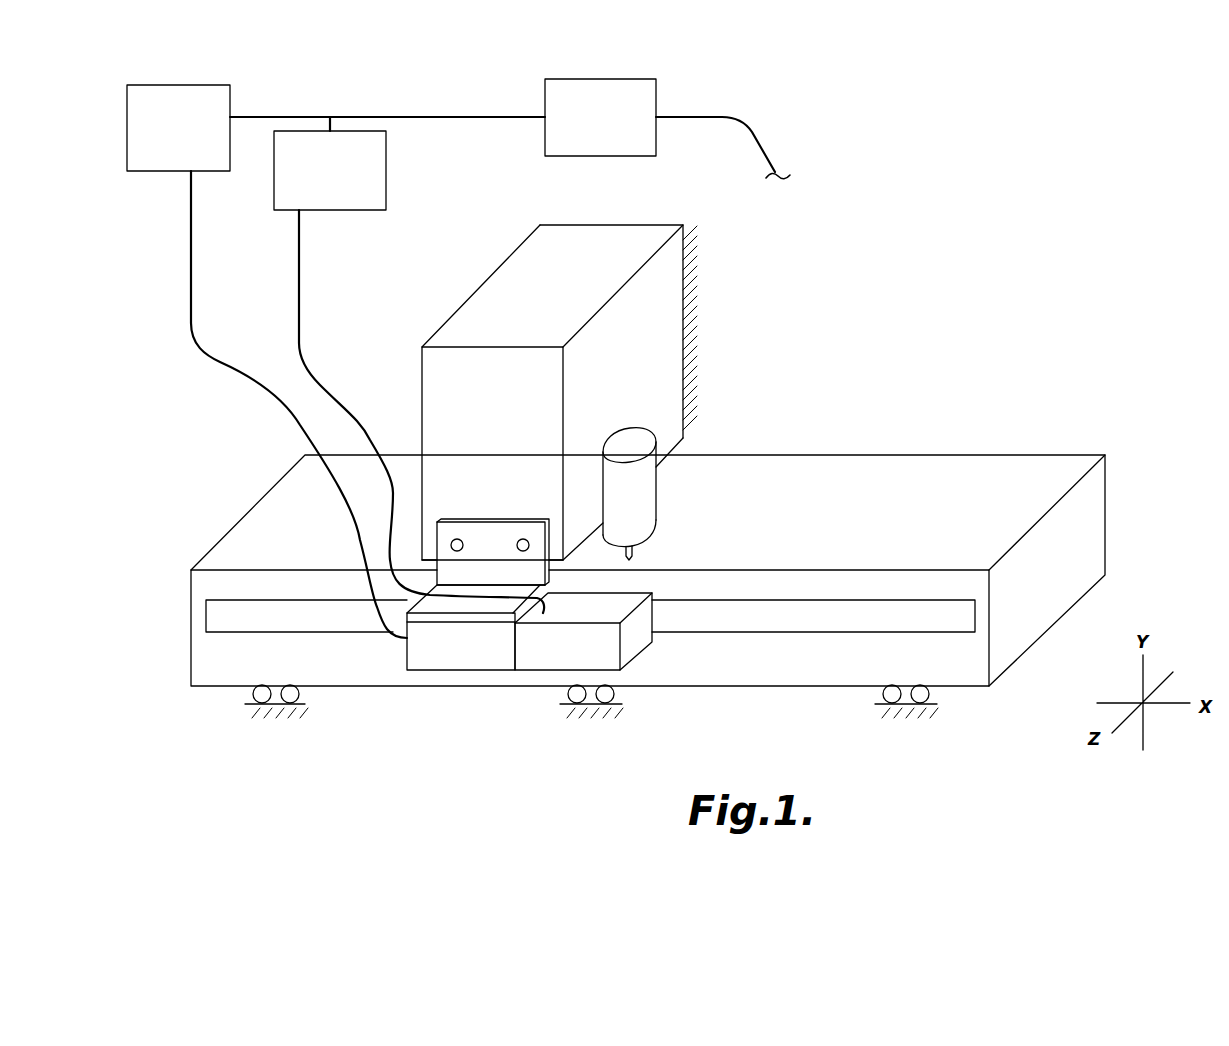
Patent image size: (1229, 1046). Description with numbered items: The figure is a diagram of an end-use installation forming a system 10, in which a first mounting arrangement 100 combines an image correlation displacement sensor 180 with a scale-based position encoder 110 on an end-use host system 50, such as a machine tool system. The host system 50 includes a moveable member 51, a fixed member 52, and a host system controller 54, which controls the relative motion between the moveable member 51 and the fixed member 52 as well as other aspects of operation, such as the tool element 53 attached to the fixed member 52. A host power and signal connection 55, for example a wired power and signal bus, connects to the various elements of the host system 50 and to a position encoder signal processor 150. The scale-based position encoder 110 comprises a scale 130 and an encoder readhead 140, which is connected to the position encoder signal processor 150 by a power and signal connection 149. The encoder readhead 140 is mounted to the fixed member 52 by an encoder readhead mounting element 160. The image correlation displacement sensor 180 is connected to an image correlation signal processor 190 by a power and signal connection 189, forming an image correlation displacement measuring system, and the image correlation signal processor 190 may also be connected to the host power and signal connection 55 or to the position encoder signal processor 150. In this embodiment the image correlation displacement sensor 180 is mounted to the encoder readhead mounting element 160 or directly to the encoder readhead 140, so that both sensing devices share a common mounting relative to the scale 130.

The system 10 is at (1143, 192).
The host system 50 is at (864, 429).
The moveable member 51 is at (822, 488).
The fixed member 52 is at (683, 385).
The tool element 53 is at (637, 480).
The host system controller 54 is at (598, 79).
The host power and signal connection 55 is at (471, 114).
The mounting arrangement 100 is at (475, 693).
The scale-based position encoder 110 is at (465, 792).
The scale 130 is at (340, 613).
The encoder readhead 140 is at (440, 652).
The power and signal connection 149 is at (191, 258).
The position encoder signal processor 150 is at (197, 85).
The encoder readhead mounting element 160 is at (480, 530).
The image correlation displacement sensor 180 is at (537, 643).
The power and signal connection 189 is at (299, 270).
The image correlation signal processor 190 is at (390, 150).